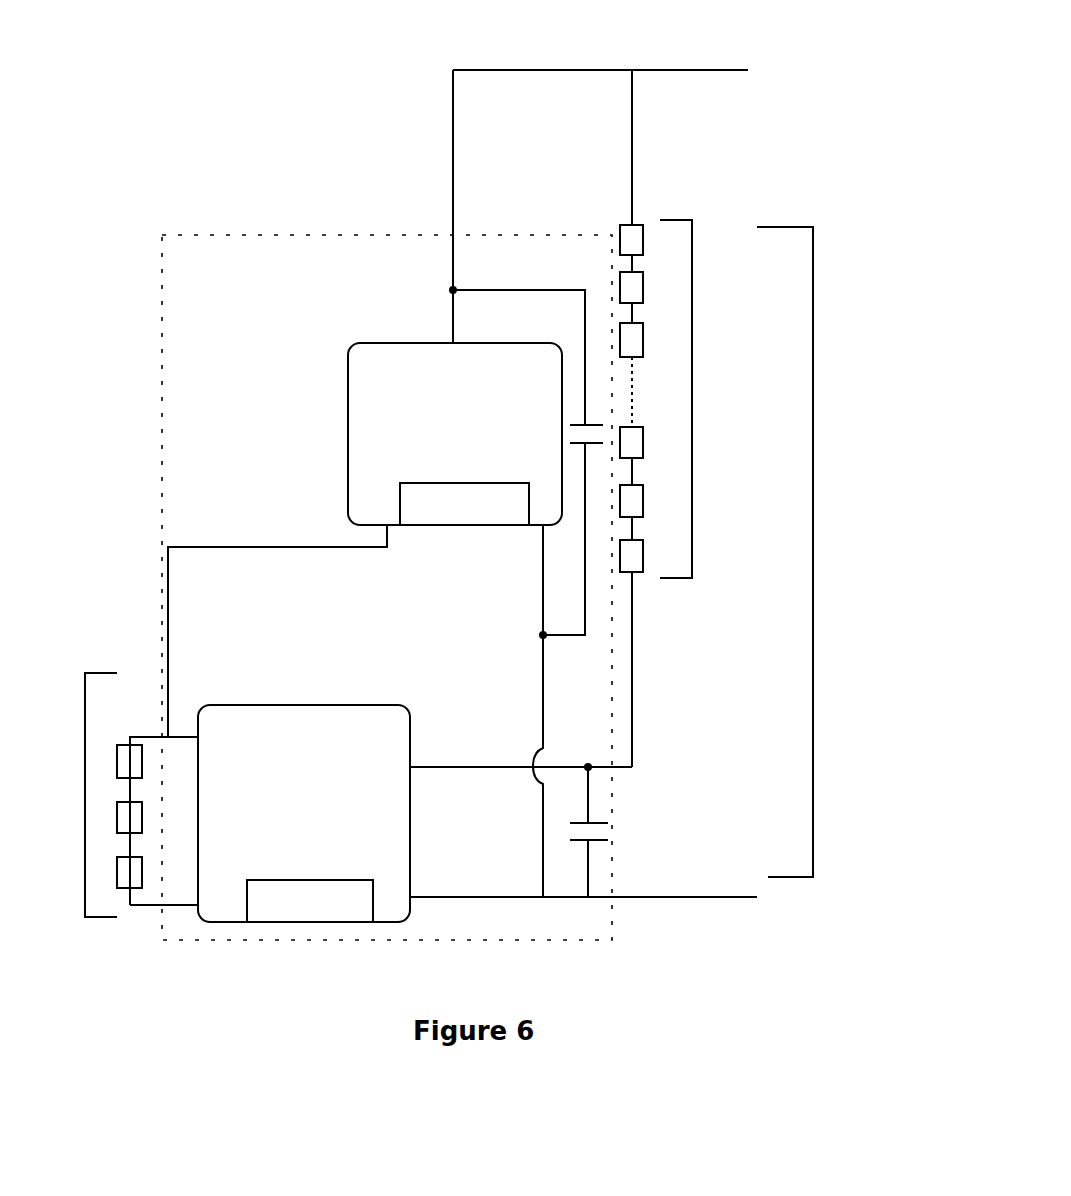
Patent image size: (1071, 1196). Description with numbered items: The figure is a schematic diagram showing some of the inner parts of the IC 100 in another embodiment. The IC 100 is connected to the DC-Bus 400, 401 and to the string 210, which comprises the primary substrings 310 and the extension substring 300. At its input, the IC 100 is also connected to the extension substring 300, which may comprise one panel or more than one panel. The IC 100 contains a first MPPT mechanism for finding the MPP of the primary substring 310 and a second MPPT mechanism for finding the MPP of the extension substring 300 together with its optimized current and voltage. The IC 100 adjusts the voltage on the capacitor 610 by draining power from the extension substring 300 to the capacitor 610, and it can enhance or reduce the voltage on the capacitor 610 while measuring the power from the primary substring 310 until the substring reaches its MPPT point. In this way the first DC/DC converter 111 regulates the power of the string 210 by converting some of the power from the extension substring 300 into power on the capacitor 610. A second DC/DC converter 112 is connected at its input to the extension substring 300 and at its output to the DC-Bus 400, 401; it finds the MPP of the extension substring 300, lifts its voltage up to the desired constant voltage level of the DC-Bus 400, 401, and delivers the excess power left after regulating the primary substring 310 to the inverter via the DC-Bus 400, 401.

The IC 100 is at (167, 332).
The first DC/DC converter 111 is at (328, 700).
The second DC/DC converter 112 is at (365, 430).
The string 210 is at (764, 473).
The extension substring 300 is at (85, 792).
The primary substring 310 is at (692, 403).
The DC-Bus 400 is at (512, 55).
The DC-Bus 401 is at (693, 898).
The capacitor 610 is at (606, 832).